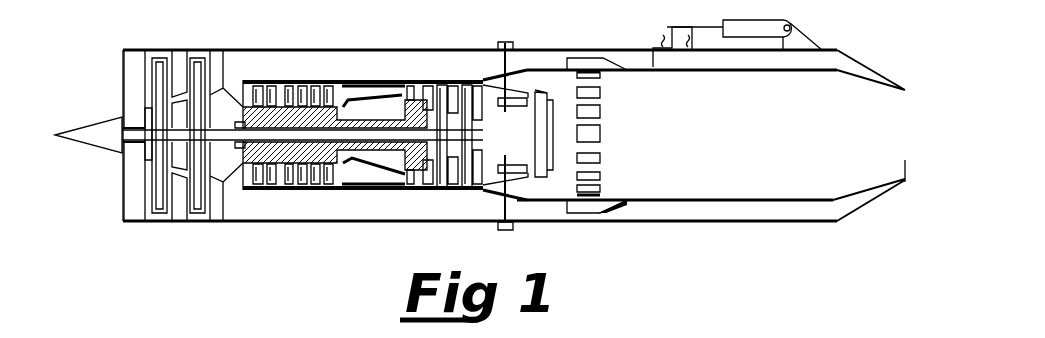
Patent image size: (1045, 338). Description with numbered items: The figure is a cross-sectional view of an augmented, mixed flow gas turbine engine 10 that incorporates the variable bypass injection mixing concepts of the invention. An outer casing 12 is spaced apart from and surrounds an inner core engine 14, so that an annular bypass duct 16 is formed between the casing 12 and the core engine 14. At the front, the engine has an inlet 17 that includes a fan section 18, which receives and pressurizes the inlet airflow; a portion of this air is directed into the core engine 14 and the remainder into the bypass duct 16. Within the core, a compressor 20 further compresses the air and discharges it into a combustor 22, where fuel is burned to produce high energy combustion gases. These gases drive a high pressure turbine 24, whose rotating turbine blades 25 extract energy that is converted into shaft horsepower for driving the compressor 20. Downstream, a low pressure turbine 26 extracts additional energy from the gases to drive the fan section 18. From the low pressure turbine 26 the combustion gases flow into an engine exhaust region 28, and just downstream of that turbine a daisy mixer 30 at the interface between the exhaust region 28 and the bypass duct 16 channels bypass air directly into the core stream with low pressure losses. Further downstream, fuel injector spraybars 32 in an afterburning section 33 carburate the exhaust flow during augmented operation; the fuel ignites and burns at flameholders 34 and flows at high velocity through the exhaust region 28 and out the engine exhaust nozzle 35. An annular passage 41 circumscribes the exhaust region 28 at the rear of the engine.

The mixed flow gas turbine engine 10 is at (210, 37).
The outer casing 12 is at (298, 222).
The inner core engine 14 is at (338, 80).
The annular bypass duct 16 is at (288, 72).
The inlet 17 is at (119, 93).
The fan section 18 is at (122, 182).
The compressor 20 is at (243, 177).
The combustor 22 is at (375, 173).
The high pressure turbine 24 is at (415, 82).
The rotating turbine blades 25 is at (430, 82).
The low pressure turbine 26 is at (463, 82).
The engine exhaust region 28 is at (815, 149).
The daisy mixer 30 is at (520, 68).
The fuel injector spraybars 32 is at (503, 196).
The afterburning section 33 is at (592, 222).
The flameholders 34 is at (541, 178).
The engine exhaust nozzle 35 is at (902, 110).
The annular passage 41 is at (722, 60).